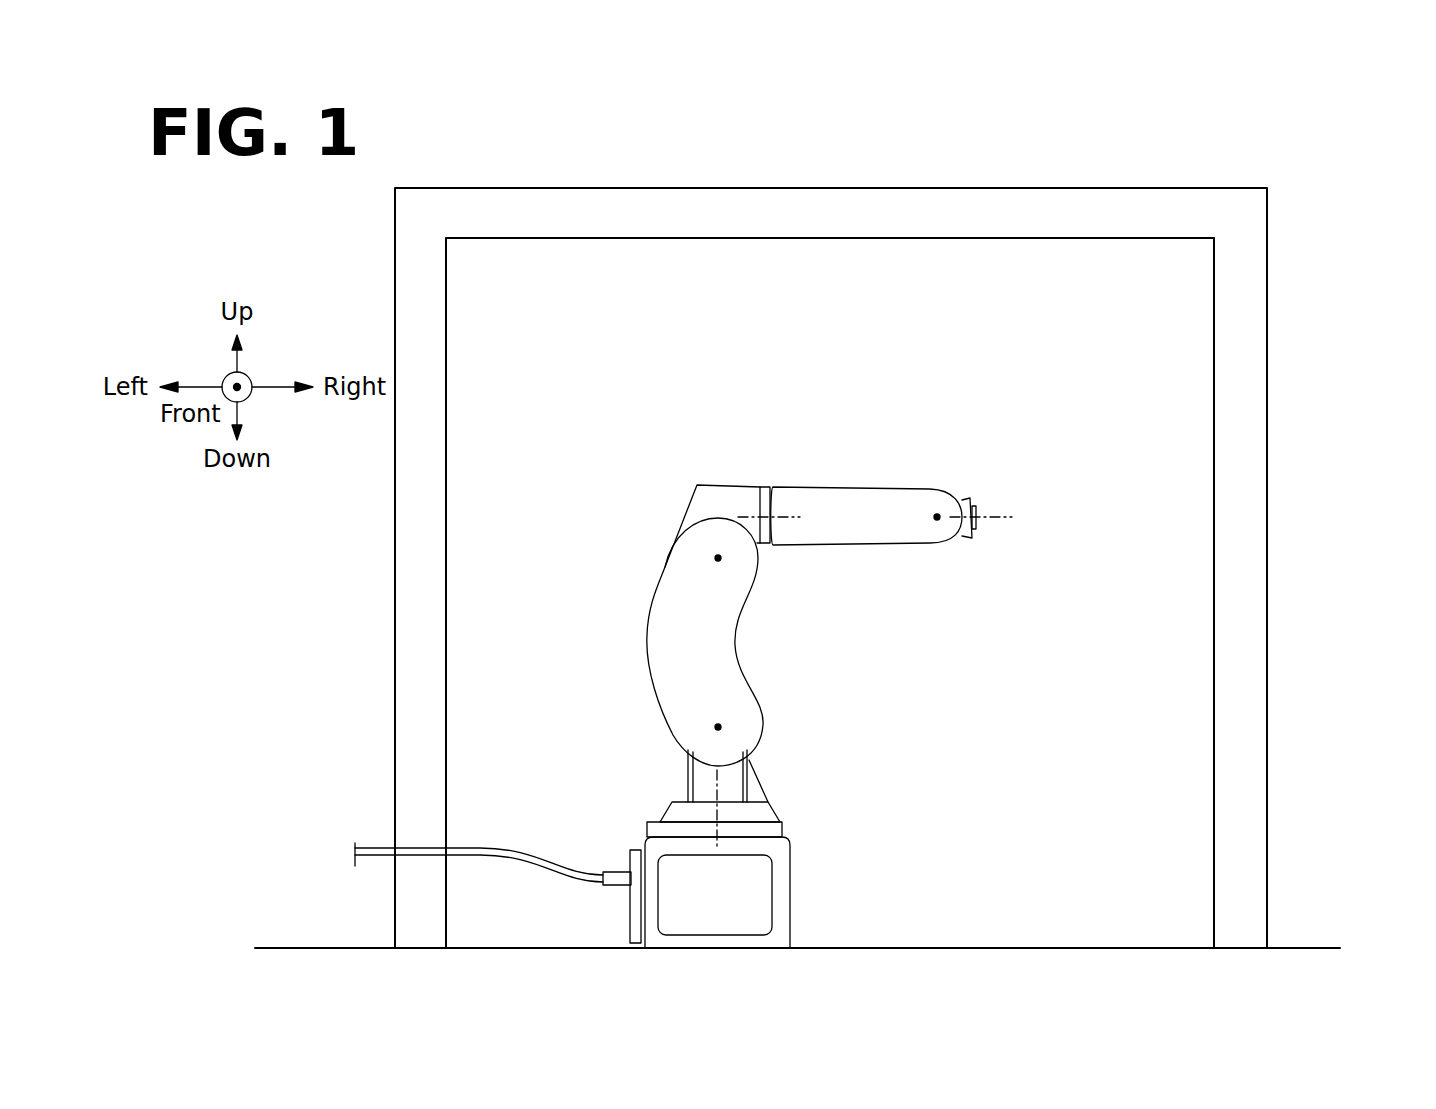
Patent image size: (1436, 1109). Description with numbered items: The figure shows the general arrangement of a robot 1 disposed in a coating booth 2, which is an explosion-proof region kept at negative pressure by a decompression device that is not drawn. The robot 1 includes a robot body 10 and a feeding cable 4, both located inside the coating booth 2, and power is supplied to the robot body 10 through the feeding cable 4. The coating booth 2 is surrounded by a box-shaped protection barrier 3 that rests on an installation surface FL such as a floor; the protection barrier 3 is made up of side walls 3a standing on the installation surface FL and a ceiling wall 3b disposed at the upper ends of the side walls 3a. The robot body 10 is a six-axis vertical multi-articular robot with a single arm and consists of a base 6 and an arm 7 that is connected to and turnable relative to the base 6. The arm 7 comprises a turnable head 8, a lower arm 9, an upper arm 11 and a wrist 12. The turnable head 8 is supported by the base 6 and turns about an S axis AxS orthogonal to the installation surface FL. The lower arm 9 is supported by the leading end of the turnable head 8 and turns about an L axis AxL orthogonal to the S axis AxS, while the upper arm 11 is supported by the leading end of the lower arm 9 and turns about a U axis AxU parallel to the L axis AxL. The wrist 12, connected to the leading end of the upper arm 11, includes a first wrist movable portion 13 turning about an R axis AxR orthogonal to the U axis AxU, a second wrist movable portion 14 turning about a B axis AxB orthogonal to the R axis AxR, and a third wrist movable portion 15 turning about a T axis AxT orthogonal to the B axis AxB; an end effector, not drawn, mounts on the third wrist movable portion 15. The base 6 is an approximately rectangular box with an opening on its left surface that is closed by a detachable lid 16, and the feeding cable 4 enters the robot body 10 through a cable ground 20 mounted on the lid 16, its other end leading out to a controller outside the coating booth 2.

The robot 1 is at (958, 372).
The coating booth 2 is at (1185, 286).
The protection barrier 3 is at (1268, 352).
The side walls 3a is at (396, 572).
The ceiling wall 3b is at (815, 188).
The feeding cable 4 is at (495, 848).
The base 6 is at (780, 893).
The arm 7 is at (845, 637).
The turnable head 8 is at (770, 810).
The lower arm 9 is at (722, 653).
The robot body 10 is at (635, 475).
The upper arm 11 is at (705, 497).
The wrist 12 is at (868, 477).
The first wrist movable portion 13 is at (820, 497).
The second wrist movable portion 14 is at (965, 500).
The third wrist movable portion 15 is at (978, 505).
The lid 16 is at (632, 910).
The cable ground 20 is at (617, 876).
The installation surface FL is at (1332, 947).
The S axis AxS is at (700, 787).
The L axis AxL is at (718, 727).
The U axis AxU is at (718, 558).
The R axis AxR is at (755, 540).
The B axis AxB is at (937, 517).
The T axis AxT is at (1000, 520).